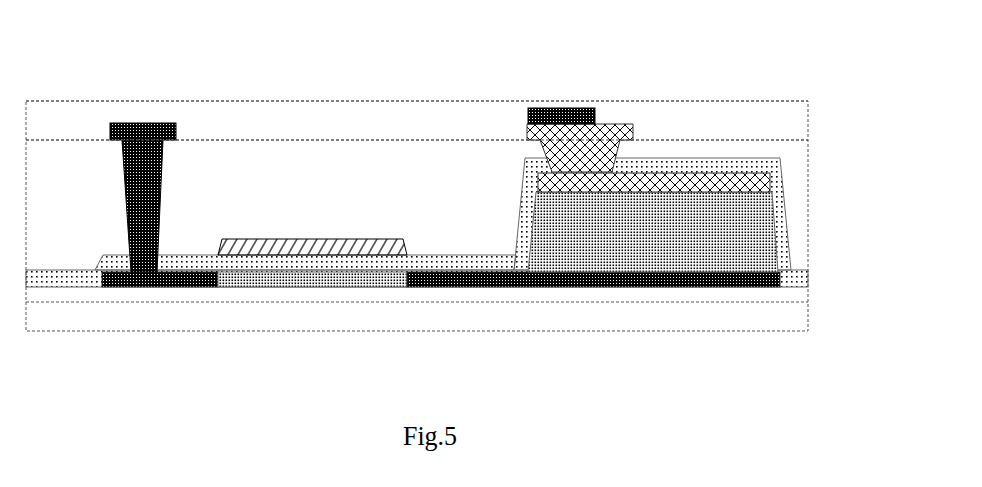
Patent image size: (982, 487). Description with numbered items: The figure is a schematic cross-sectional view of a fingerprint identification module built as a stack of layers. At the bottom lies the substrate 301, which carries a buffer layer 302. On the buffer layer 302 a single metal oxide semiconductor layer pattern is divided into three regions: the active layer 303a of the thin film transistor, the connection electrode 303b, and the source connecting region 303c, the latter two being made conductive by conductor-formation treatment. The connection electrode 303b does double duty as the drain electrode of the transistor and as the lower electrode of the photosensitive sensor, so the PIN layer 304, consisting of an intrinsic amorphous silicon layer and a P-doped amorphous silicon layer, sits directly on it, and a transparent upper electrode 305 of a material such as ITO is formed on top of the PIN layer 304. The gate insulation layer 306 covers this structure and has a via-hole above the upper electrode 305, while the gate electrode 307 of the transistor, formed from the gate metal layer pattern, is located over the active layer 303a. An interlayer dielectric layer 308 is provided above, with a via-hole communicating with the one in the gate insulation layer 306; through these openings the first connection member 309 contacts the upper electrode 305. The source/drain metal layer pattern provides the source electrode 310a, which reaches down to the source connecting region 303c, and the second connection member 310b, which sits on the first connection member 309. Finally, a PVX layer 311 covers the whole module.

The substrate 301 is at (808, 327).
The buffer layer 302 is at (443, 292).
The active layer 303a is at (347, 282).
The connection electrode 303b is at (570, 279).
The source connecting region 303c is at (147, 280).
The PIN layer 304 is at (752, 236).
The upper electrode 305 is at (748, 186).
The gate insulation layer 306 is at (773, 163).
The gate electrode 307 is at (277, 247).
The interlayer dielectric layer 308 is at (418, 170).
The first connection member 309 is at (598, 140).
The source electrode 310a is at (137, 125).
The second connection member 310b is at (565, 110).
The PVX layer 311 is at (287, 123).